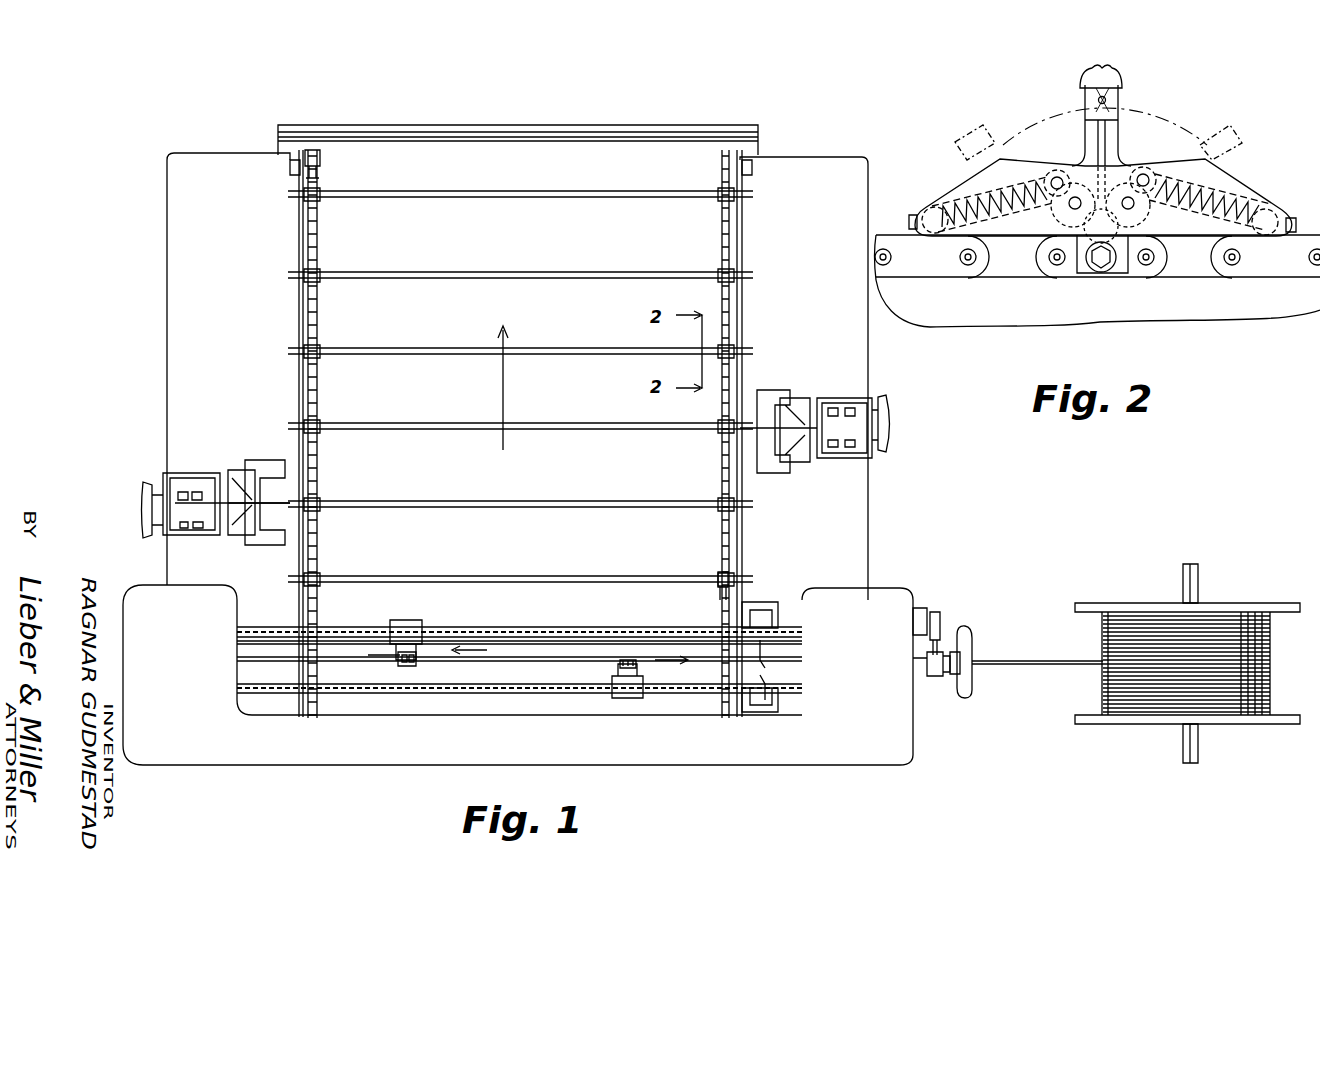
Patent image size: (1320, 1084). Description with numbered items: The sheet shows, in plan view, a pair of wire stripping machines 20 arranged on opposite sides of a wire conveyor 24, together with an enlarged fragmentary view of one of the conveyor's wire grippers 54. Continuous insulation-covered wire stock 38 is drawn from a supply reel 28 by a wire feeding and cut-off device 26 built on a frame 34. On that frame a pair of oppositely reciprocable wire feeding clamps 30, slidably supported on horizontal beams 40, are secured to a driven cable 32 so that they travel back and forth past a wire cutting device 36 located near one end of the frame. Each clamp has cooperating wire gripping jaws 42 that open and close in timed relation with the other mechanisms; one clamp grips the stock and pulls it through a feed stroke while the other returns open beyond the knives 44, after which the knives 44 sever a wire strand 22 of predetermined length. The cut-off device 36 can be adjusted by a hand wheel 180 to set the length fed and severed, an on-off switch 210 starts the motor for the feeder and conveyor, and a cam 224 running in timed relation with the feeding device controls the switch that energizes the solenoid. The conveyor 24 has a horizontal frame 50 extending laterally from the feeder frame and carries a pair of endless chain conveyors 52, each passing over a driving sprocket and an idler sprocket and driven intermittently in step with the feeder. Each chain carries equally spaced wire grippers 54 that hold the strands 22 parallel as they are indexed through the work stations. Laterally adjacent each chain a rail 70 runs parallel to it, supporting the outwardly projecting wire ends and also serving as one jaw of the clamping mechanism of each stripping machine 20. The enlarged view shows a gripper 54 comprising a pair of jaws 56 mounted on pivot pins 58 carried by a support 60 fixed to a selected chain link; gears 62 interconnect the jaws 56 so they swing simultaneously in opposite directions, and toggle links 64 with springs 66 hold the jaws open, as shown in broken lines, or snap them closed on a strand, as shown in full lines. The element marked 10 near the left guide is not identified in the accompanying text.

In FIG. 1, the guide rail / machine frame 10 is at (300, 232).
In FIG. 1, the clamp assembly 20 is at (187, 461).
In FIG. 1, the rod / bar 22 is at (560, 200).
In FIG. 2, the rod / bar 22 is at (1108, 100).
In FIG. 1, the bracket 24 is at (285, 181).
In FIG. 1, the drive housing 26 is at (865, 600).
In FIG. 1, the spool 28 is at (1215, 604).
In FIG. 1, the carriage 30 is at (405, 624).
In FIG. 1, the lead screw 32 is at (270, 638).
In FIG. 1, the base frame 34 is at (650, 757).
In FIG. 1, the bearing block 36 is at (778, 602).
In FIG. 1, the shaft 38 is at (1000, 667).
In FIG. 1, the lead screw 40 is at (356, 640).
In FIG. 1, the follower 42 is at (408, 660).
In FIG. 1, the bracket 44 is at (770, 676).
In FIG. 1, the side frame panel 50 is at (185, 276).
In FIG. 1, the chain 52 is at (320, 323).
In FIG. 2, the chain 52 is at (1286, 275).
In FIG. 1, the clamp body 54 is at (322, 273).
In FIG. 2, the clamp body 54 is at (1180, 128).
In FIG. 1, the jaw 56 is at (718, 578).
In FIG. 2, the jaw 56 is at (1253, 140).
In FIG. 2, the gear 58 is at (1068, 208).
In FIG. 2, the bracket 60 is at (1125, 275).
In FIG. 2, the nut 62 is at (1101, 247).
In FIG. 2, the lug 64 is at (908, 222).
In FIG. 1, the spring / plate 66 is at (437, 142).
In FIG. 2, the spring / plate 66 is at (960, 178).
In FIG. 1, the guide rail 70 is at (738, 243).
In FIG. 1, the knob 180 is at (967, 642).
In FIG. 1, the coupling 210 is at (920, 608).
In FIG. 1, the fitting 224 is at (940, 678).